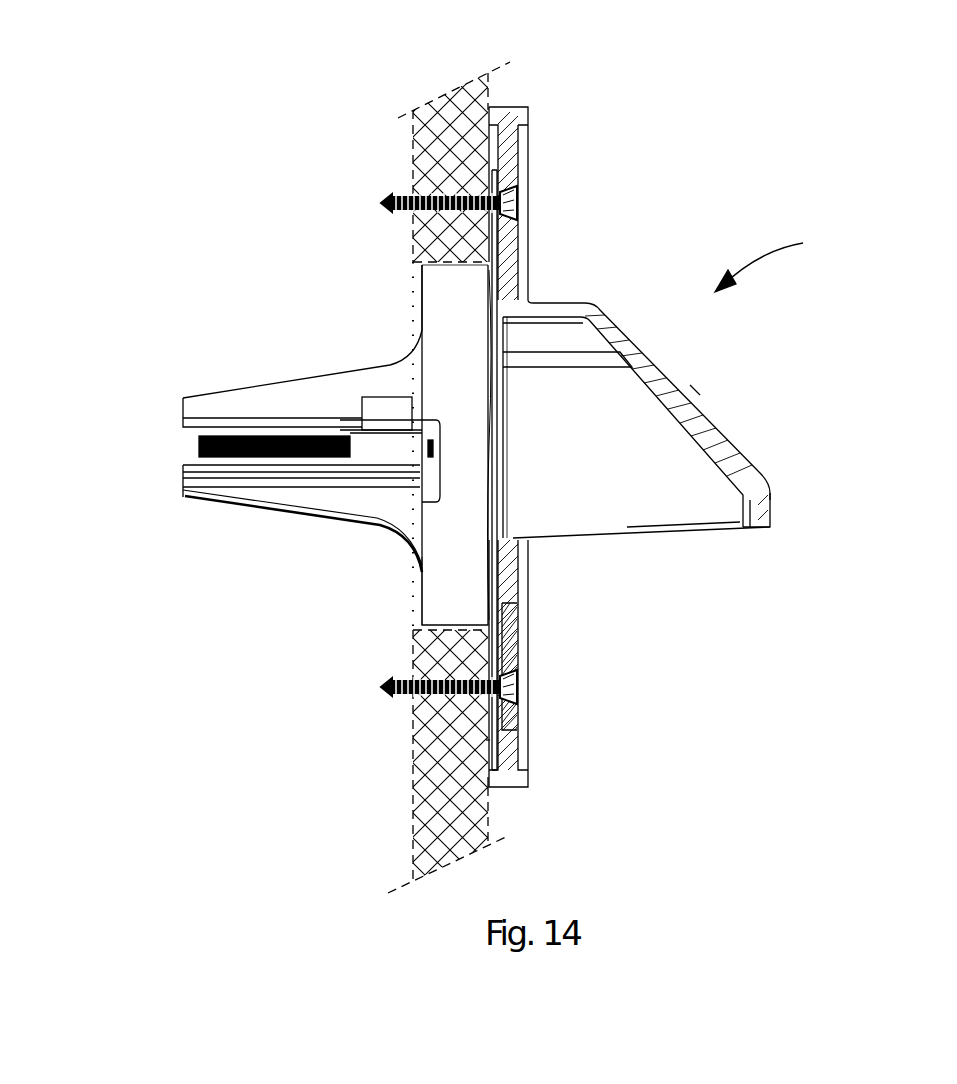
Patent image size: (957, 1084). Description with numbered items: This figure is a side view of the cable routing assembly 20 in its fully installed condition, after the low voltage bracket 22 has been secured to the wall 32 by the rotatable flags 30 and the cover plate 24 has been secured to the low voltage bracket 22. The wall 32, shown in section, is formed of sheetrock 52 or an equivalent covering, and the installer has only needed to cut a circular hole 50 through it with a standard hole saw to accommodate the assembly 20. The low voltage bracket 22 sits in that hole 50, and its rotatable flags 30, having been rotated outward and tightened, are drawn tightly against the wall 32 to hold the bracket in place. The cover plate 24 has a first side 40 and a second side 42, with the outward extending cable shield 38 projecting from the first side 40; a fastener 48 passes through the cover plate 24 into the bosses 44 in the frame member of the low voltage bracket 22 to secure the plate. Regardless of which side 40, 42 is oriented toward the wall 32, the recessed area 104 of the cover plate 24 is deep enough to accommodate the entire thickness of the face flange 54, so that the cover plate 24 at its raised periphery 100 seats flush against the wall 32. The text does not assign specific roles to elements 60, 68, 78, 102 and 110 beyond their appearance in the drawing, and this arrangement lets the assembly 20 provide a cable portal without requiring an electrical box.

The cable routing assembly 20 is at (771, 262).
The low voltage bracket 22 is at (301, 346).
The cover plate 24 is at (528, 107).
The rotatable flags 30 is at (390, 449).
The wall 32 is at (488, 808).
The cable shield 38 is at (690, 387).
The first side 40 is at (512, 637).
The second side 42 is at (488, 638).
The bosses 44 is at (827, 338).
The fastener 48 is at (508, 203).
The circular hole 50 is at (425, 265).
The sheetrock 52 is at (428, 172).
The face flange 54 is at (517, 150).
The front opening 60 is at (813, 500).
The magnet 68 is at (263, 455).
The upper housing shell 78 is at (280, 383).
The raised periphery 100 is at (488, 106).
The gasket 102 is at (505, 440).
The recessed area 104 is at (488, 740).
The flange bottom wall 110 is at (627, 527).